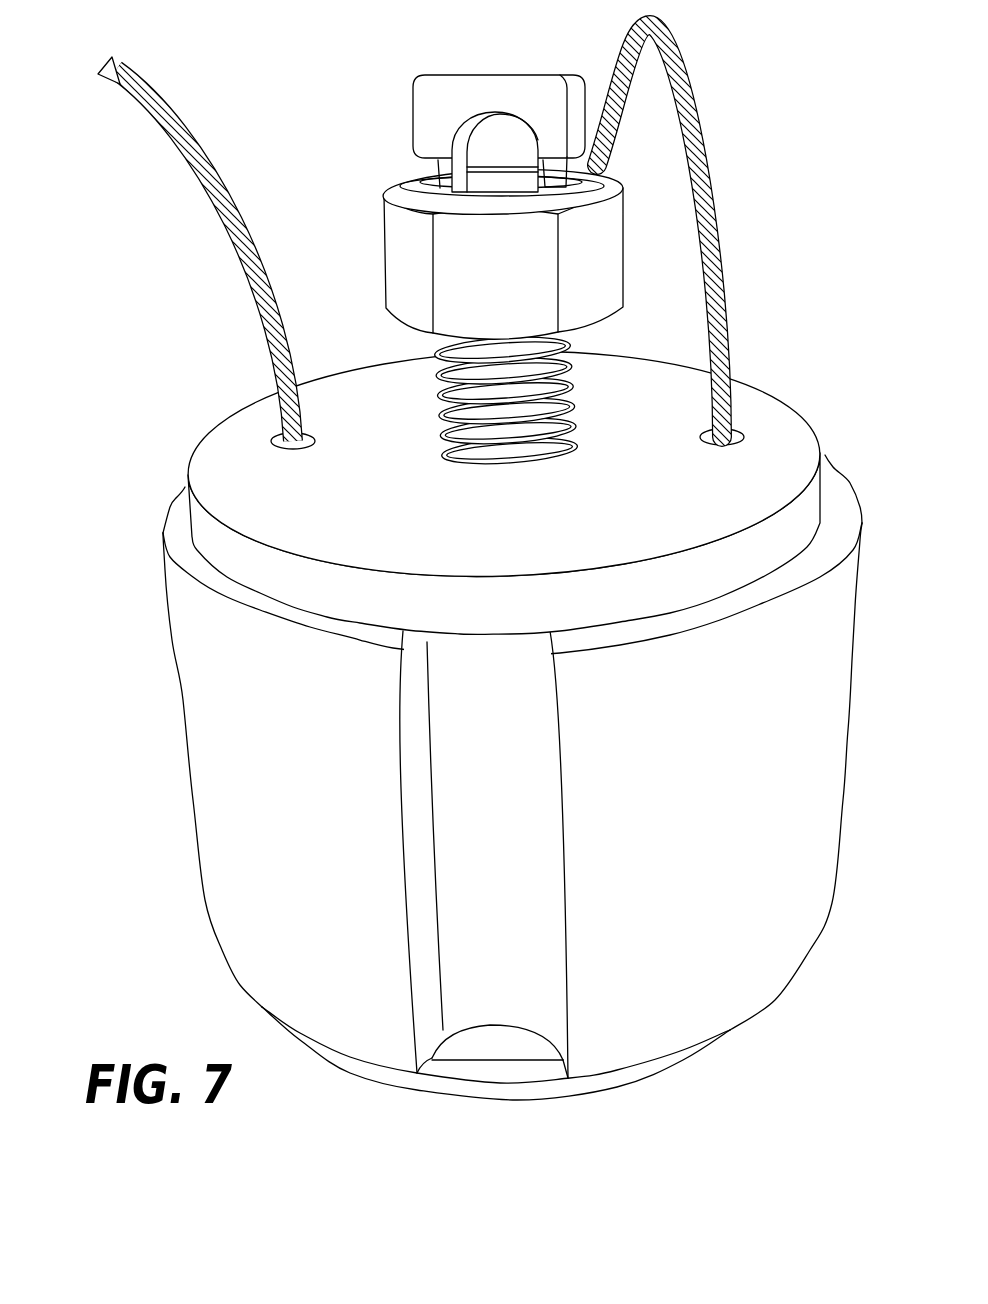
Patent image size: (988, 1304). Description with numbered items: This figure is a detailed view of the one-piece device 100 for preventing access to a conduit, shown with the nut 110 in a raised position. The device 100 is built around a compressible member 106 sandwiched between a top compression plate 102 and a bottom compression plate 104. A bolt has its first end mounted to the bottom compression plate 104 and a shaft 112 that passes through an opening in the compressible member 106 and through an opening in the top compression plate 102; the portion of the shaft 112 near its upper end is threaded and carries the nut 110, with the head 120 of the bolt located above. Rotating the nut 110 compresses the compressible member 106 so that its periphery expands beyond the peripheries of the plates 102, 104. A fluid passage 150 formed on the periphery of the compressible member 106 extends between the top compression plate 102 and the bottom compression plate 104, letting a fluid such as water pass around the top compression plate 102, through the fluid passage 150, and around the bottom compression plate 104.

The device for preventing access to a conduit 100 is at (456, 575).
The top compression plate 102 is at (762, 412).
The bottom compression plate 104 is at (740, 1055).
The compressible member 106 is at (845, 455).
The nut 110 is at (403, 237).
The shaft 112 is at (437, 387).
The head 120 is at (450, 105).
The fluid passage 150 is at (497, 1037).